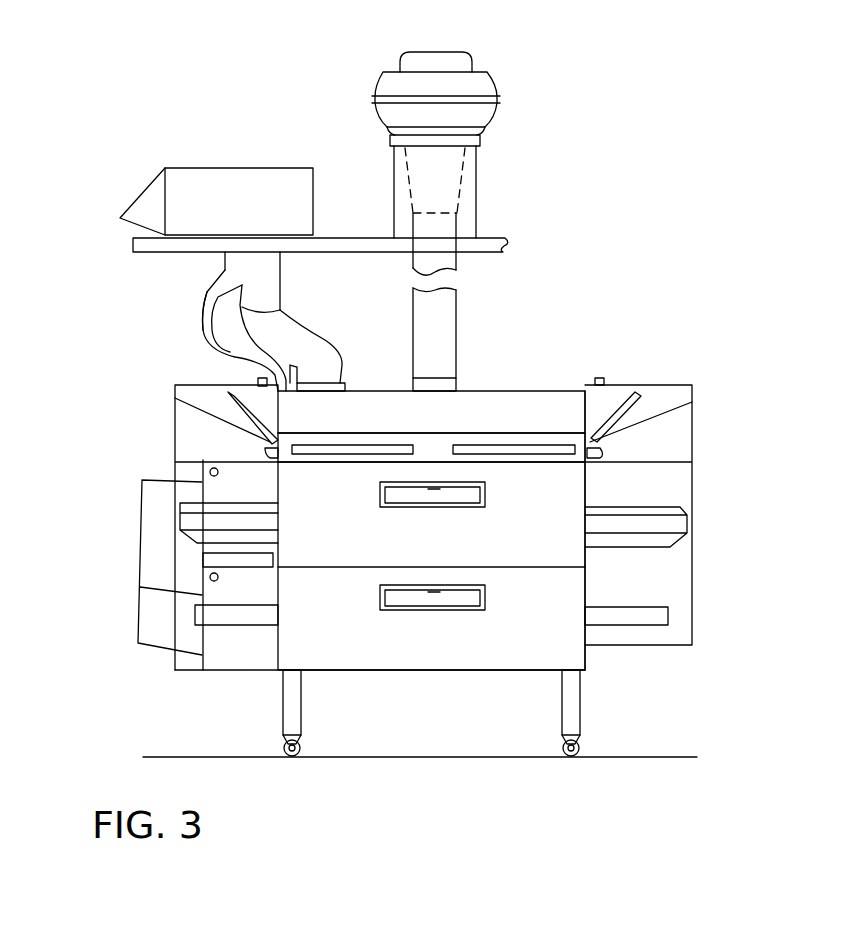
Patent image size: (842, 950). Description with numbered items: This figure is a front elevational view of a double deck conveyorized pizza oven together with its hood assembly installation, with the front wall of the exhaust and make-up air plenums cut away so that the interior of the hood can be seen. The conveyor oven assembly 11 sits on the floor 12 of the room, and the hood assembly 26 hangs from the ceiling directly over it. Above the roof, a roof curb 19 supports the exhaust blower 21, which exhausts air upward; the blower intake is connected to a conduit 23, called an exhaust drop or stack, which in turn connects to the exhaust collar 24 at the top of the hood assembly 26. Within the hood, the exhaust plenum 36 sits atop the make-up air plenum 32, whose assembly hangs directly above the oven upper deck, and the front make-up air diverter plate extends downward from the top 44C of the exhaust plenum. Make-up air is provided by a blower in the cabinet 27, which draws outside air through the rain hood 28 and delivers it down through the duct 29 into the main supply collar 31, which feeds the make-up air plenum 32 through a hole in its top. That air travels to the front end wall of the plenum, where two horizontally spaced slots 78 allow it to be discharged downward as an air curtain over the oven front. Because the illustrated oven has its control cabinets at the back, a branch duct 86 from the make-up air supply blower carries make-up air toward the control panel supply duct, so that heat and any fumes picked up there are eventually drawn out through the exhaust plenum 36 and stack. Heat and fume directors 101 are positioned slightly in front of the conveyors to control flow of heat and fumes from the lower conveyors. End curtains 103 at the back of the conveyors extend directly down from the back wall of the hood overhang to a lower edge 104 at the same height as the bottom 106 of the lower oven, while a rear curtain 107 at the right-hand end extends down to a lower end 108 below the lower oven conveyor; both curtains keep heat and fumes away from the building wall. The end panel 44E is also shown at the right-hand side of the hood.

The conveyor oven assembly 11 is at (395, 700).
The floor 12 is at (442, 728).
The roof curb 19 is at (497, 186).
The exhaust blower 21 is at (488, 75).
The conduit 23 is at (485, 295).
The exhaust collar 24 is at (483, 365).
The hood assembly 26 is at (643, 353).
The cabinet 27 is at (251, 208).
The rain hood 28 is at (161, 218).
The duct 29 is at (268, 335).
The main supply collar 31 is at (341, 382).
The make-up air plenum 32 is at (448, 460).
The exhaust plenum 36 is at (448, 428).
The top of the exhaust plenum 44C is at (419, 486).
The conveyor end panel 44E is at (680, 492).
The slots 78 is at (433, 494).
The branch duct 86 is at (212, 332).
The directors 101 is at (207, 522).
The end curtains 103 is at (142, 530).
The lower edge 104 is at (167, 667).
The bottom of the lower oven 106 is at (380, 704).
The rear curtain 107 is at (742, 530).
The lower end 108 is at (700, 656).